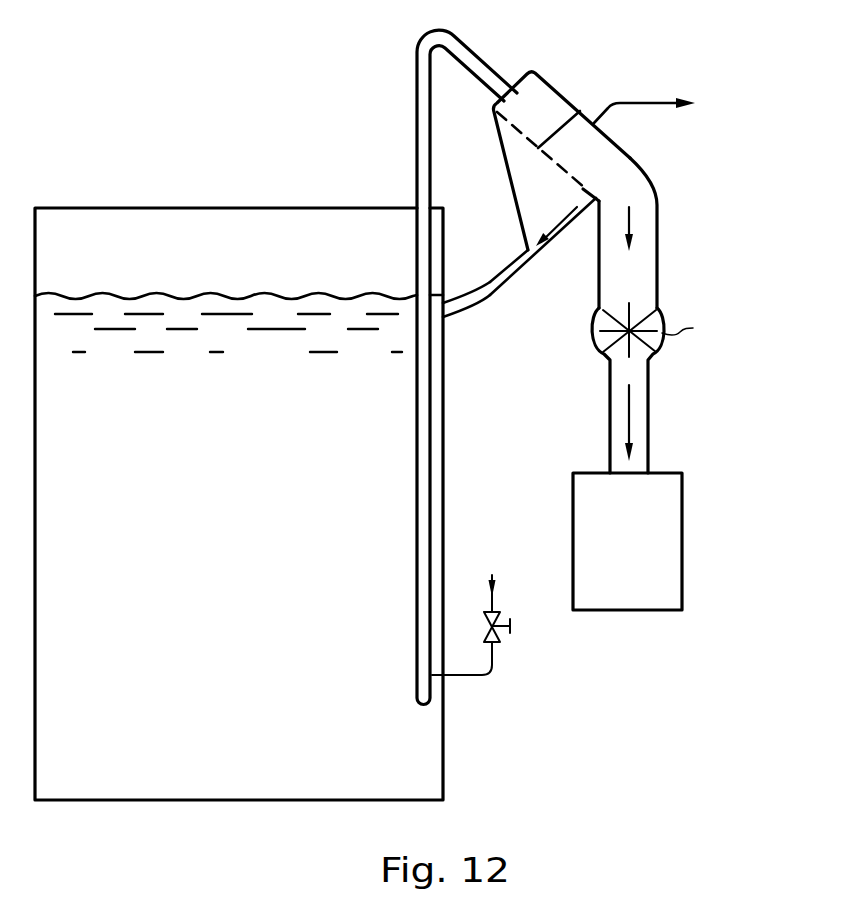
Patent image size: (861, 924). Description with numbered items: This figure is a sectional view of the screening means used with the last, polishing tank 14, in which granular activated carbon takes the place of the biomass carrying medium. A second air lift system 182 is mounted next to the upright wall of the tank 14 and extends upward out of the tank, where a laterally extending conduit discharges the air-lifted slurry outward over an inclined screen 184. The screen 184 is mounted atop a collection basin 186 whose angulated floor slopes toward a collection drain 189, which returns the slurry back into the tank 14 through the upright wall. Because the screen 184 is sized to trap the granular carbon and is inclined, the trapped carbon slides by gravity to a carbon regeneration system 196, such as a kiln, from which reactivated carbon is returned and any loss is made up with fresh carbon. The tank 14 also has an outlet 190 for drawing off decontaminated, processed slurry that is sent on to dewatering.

The tank 14 is at (220, 802).
The second air lift system 182 is at (417, 538).
The inclined screen 184 is at (580, 110).
The collection basin 186 is at (572, 227).
The collection drain 189 is at (493, 290).
The outlet 190 is at (645, 270).
The carbon regeneration system 196 is at (645, 556).